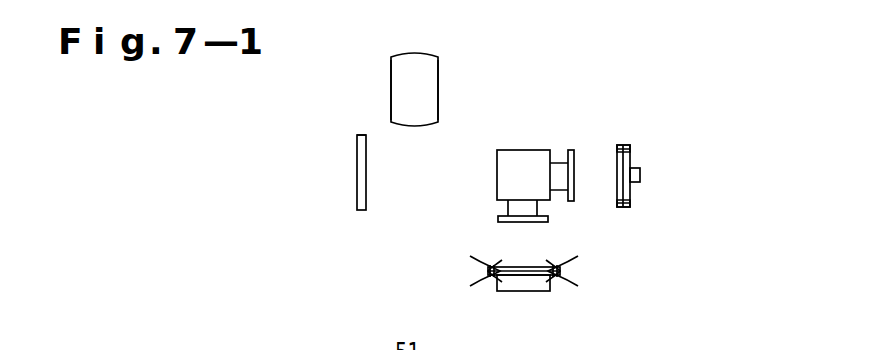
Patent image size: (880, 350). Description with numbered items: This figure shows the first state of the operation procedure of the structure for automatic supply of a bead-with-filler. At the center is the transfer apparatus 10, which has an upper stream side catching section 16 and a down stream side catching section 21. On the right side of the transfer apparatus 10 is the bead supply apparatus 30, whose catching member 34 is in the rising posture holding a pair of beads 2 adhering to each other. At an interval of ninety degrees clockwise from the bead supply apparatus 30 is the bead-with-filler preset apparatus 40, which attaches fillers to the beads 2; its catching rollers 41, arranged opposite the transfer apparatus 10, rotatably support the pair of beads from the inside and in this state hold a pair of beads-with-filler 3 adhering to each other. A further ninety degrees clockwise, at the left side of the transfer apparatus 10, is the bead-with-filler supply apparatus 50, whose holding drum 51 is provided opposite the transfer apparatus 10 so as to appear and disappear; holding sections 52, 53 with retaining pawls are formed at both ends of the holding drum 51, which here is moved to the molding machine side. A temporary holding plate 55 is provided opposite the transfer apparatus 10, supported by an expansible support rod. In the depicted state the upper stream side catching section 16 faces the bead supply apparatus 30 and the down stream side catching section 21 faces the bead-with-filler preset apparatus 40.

The bead 2 is at (620, 145).
The bead-with-filler 3 is at (492, 268).
The transfer apparatus 10 is at (520, 133).
The upper stream side catching section 16 is at (571, 150).
The down stream side catching section 21 is at (548, 222).
The bead supply apparatus 30 is at (655, 178).
The catching member 34 is at (633, 153).
The bead-with-filler preset apparatus 40 is at (520, 293).
The catching roller 41 is at (526, 266).
The bead-with-filler supply apparatus 50 is at (397, 216).
The holding drum 51 is at (417, 52).
The holding section 52 is at (439, 66).
The holding section 53 is at (391, 72).
The temporary holding plate 55 is at (357, 152).